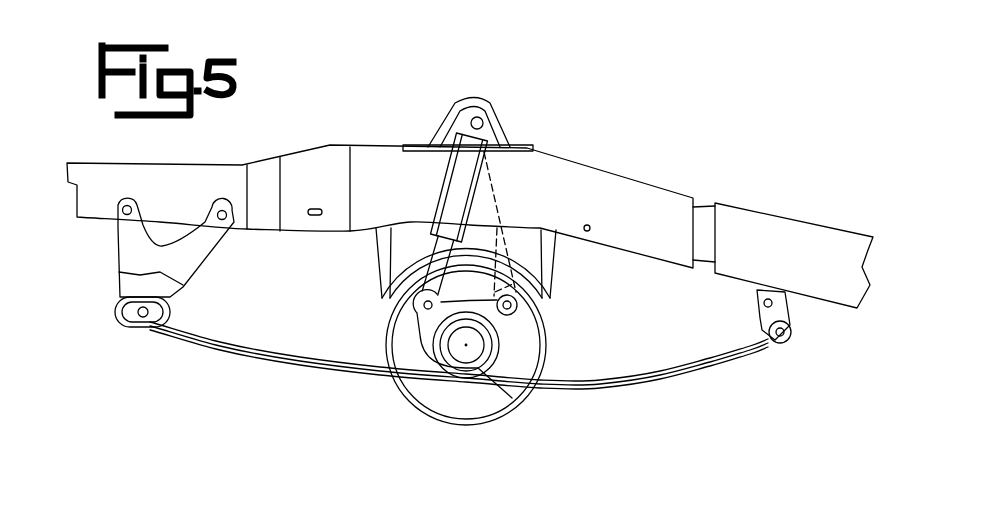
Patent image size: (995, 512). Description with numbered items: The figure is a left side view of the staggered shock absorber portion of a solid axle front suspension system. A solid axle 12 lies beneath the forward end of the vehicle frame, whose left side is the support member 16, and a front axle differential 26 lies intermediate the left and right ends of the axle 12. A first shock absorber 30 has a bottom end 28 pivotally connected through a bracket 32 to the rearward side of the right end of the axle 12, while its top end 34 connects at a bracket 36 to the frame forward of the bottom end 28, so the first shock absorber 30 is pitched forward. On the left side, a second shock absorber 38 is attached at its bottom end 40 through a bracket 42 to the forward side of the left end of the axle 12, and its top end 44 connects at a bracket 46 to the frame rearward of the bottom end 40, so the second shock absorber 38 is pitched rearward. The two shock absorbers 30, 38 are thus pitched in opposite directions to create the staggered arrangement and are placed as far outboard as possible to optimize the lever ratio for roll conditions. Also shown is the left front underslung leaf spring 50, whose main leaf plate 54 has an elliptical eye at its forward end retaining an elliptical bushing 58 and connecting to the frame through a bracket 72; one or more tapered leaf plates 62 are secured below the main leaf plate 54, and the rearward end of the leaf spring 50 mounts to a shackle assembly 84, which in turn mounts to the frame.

The solid axle 12 is at (513, 387).
The support member 16 is at (647, 182).
The front axle differential 26 is at (548, 345).
The bottom end 28 is at (560, 266).
The first shock absorber 30 is at (512, 209).
The bracket 32 is at (560, 318).
The top end 34 is at (444, 126).
The bracket 36 is at (444, 103).
The second shock absorber 38 is at (430, 190).
The bottom end 40 is at (414, 303).
The bracket 42 is at (420, 330).
The top end 44 is at (487, 160).
The bracket 46 is at (498, 123).
The front underslung leaf spring 50 is at (660, 392).
The main leaf plate 54 is at (692, 363).
The elliptical bushing 58 is at (150, 326).
The tapered leaf plate 62 is at (713, 371).
The bracket 72 is at (115, 264).
The shackle assembly 84 is at (801, 308).